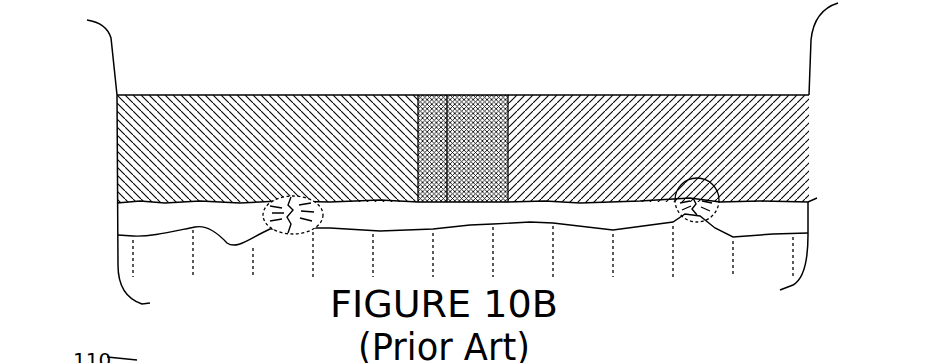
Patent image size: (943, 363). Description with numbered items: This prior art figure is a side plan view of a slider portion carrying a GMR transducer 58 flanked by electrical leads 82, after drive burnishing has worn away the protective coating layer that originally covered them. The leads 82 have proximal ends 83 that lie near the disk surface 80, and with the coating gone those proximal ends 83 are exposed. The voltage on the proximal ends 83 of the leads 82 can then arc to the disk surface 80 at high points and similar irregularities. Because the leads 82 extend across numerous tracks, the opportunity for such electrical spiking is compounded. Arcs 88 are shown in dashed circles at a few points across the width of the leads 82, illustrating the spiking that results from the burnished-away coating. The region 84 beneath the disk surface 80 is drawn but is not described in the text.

The GMR transducer 58 is at (445, 108).
The electrical leads 82 is at (297, 110).
The proximal ends 83 is at (155, 192).
The disk surface 80 is at (296, 271).
The air bearing surface region 84 is at (786, 251).
The arcs 88 is at (258, 217).